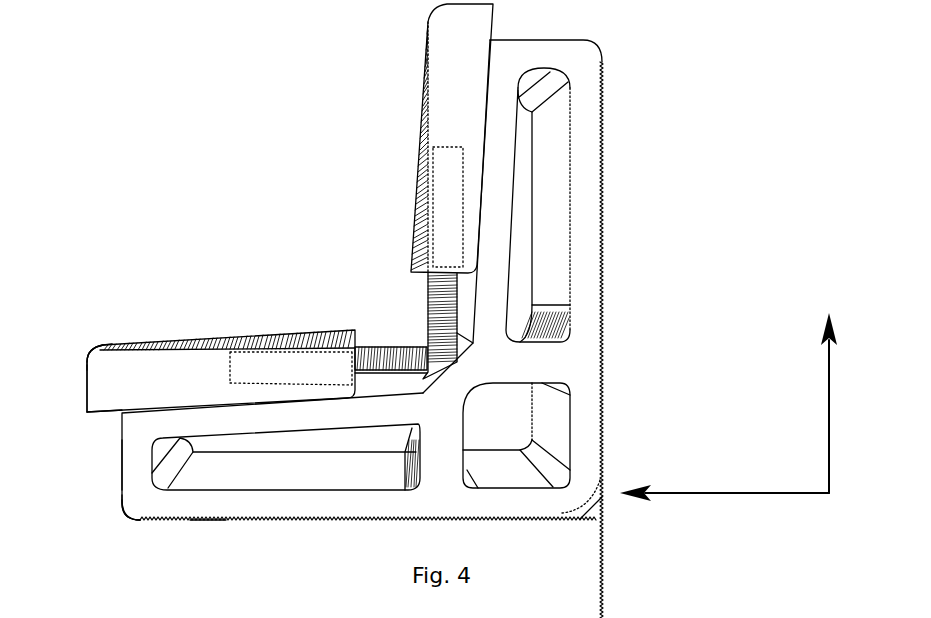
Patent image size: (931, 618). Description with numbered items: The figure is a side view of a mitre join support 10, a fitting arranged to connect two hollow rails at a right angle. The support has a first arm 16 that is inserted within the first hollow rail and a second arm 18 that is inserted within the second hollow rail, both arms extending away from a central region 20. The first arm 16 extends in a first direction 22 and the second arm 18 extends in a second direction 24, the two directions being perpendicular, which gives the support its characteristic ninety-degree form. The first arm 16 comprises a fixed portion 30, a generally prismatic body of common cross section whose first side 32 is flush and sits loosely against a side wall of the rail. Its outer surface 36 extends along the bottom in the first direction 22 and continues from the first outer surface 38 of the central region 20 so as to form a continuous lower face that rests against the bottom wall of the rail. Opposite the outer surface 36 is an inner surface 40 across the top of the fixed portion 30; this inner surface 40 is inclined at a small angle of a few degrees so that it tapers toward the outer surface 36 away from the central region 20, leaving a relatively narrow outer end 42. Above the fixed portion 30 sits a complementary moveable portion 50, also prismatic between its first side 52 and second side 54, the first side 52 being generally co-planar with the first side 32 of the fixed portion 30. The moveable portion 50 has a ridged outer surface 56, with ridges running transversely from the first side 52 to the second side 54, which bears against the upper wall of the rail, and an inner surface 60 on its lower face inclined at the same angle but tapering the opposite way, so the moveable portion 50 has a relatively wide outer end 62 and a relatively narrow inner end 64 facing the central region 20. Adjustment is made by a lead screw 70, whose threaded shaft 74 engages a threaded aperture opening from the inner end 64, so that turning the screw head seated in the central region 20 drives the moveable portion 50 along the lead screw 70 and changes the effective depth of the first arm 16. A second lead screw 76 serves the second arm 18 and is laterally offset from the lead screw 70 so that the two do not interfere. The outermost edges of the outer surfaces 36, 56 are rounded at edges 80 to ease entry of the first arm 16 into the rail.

The mitre join support 10 is at (296, 133).
The first arm 16 is at (248, 495).
The second arm 18 is at (600, 252).
The central region 20 is at (557, 500).
The first direction 22 is at (733, 493).
The second direction 24 is at (829, 380).
The fixed portion 30 is at (207, 508).
The first side 32 is at (152, 510).
The outer surface 36 is at (350, 517).
The first outer surface 38 is at (508, 522).
The inner surface 40 is at (383, 383).
The outer end 42 is at (122, 463).
The moveable portion 50 is at (160, 332).
The first side 52 is at (108, 372).
The second side 54 is at (238, 332).
The outer surface 56 is at (173, 338).
The inner surface 60 is at (103, 418).
The outer end 62 is at (85, 383).
The inner end 64 is at (355, 340).
The lead screw 70 is at (397, 350).
The threaded shaft 74 is at (383, 345).
The lead screw 76 is at (432, 295).
The rounded edges 80 is at (100, 347).